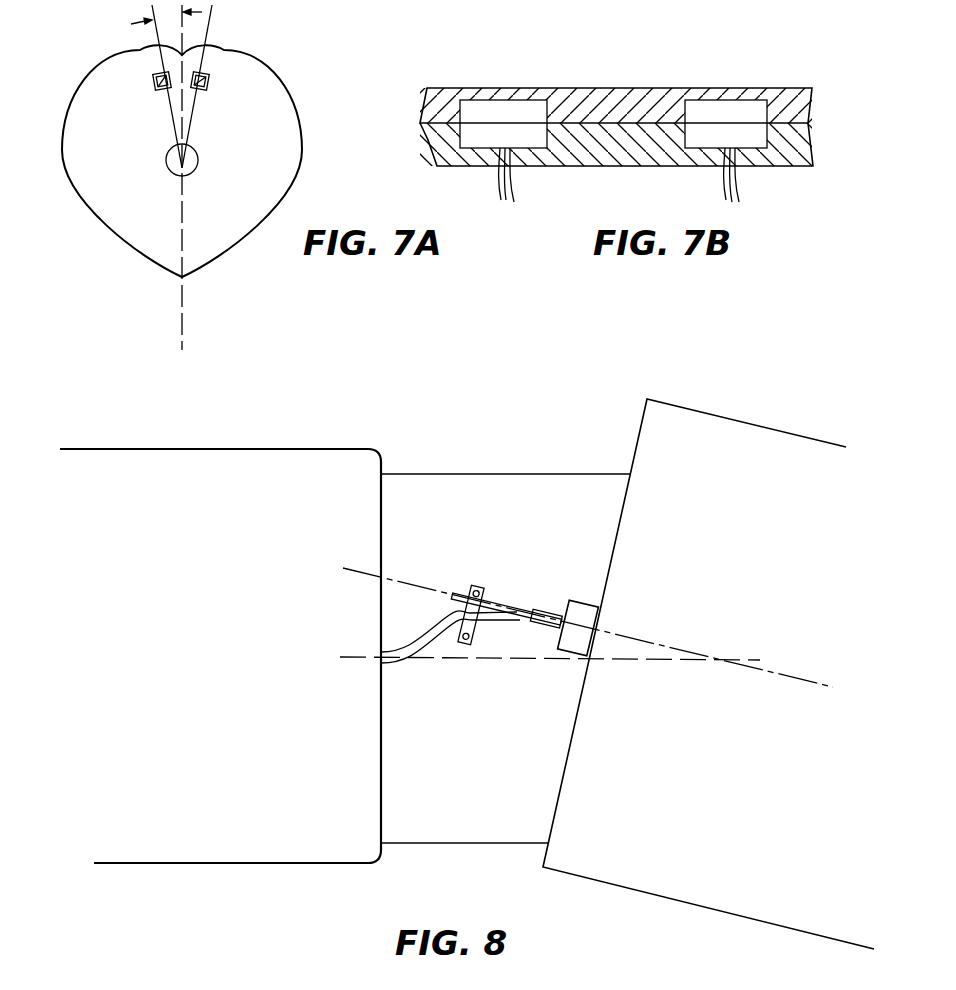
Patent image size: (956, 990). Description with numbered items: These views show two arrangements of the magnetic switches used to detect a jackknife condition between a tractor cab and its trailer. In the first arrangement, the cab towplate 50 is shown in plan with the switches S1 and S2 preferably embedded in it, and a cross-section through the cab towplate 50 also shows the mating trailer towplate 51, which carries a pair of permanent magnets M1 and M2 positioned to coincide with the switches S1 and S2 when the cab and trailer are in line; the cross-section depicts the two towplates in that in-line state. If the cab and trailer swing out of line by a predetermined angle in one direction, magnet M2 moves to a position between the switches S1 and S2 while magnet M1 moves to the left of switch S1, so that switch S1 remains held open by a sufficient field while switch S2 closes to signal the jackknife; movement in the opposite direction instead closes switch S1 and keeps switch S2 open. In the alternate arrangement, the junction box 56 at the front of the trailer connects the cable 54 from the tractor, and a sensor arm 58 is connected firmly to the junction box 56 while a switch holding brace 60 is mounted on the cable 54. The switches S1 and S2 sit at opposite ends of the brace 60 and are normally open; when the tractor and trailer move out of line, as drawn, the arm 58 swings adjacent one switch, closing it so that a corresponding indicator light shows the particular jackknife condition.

In FIG. 7A, the cab towplate 50 is at (277, 132).
In FIG. 7B, the cab towplate 50 is at (563, 157).
In FIG. 7B, the trailer towplate 51 is at (567, 98).
In FIG. 7A, the switch S1 is at (153, 78).
In FIG. 7B, the switch S1 is at (490, 137).
In FIG. 7A, the switch S2 is at (208, 78).
In FIG. 7B, the switch S2 is at (717, 130).
In FIG. 7B, the permanent magnet M1 is at (497, 107).
In FIG. 7B, the permanent magnet M2 is at (722, 106).
In FIG. 8, the cable 54 is at (424, 647).
In FIG. 8, the junction box 56 is at (587, 605).
In FIG. 8, the sensor arm 58 is at (452, 592).
In FIG. 8, the switch holding brace 60 is at (482, 625).